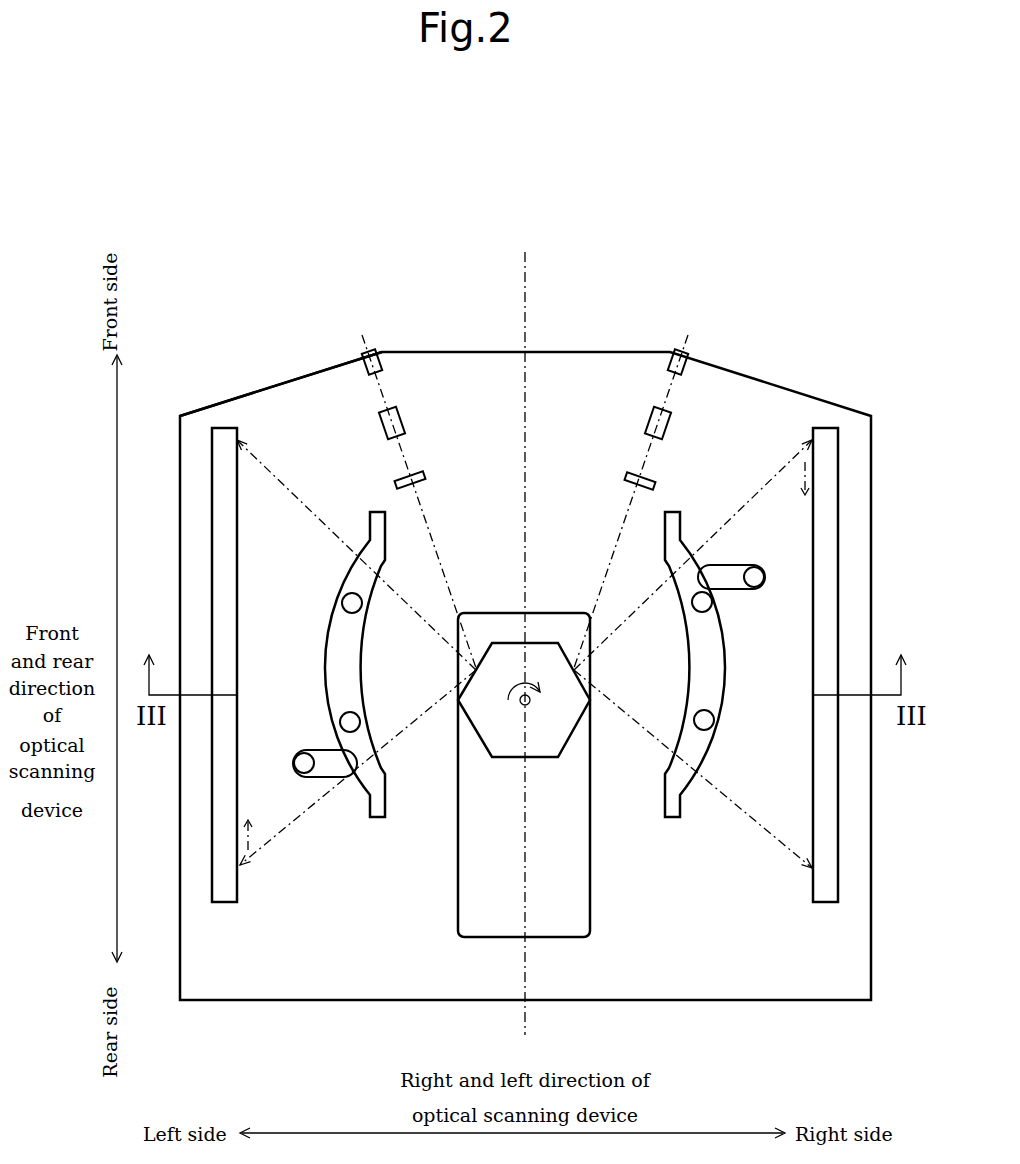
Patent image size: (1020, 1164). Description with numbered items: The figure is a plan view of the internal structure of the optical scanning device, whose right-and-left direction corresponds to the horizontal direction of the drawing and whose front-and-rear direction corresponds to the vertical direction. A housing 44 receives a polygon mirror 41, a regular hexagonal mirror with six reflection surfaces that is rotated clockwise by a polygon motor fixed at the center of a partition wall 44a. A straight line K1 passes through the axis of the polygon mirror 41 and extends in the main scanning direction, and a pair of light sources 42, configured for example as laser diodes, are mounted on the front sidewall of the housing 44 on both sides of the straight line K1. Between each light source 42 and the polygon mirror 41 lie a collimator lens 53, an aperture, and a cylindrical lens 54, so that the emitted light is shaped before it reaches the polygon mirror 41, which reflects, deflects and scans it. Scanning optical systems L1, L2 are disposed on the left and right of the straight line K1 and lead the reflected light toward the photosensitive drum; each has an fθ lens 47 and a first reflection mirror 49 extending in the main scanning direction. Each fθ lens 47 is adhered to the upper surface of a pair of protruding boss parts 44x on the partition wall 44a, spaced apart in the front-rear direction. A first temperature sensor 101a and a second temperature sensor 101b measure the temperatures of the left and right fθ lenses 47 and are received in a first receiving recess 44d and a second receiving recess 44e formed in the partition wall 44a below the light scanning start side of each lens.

The polygon mirror 41 is at (583, 722).
The light source 42 is at (380, 350).
The housing 44 is at (328, 364).
The partition wall 44a is at (265, 418).
The first receiving recess 44d is at (305, 778).
The second receiving recess 44e is at (752, 588).
The protruding boss part 44x is at (362, 607).
The fθ lens 47 is at (327, 642).
The first reflection mirror 49 is at (228, 528).
The collimator lens 53 is at (400, 418).
The cylindrical lens 54 is at (421, 477).
The first temperature sensor 101a is at (322, 765).
The second temperature sensor 101b is at (728, 582).
The straight line K1 is at (527, 282).
The scanning optical system L1 is at (347, 538).
The scanning optical system L2 is at (712, 530).